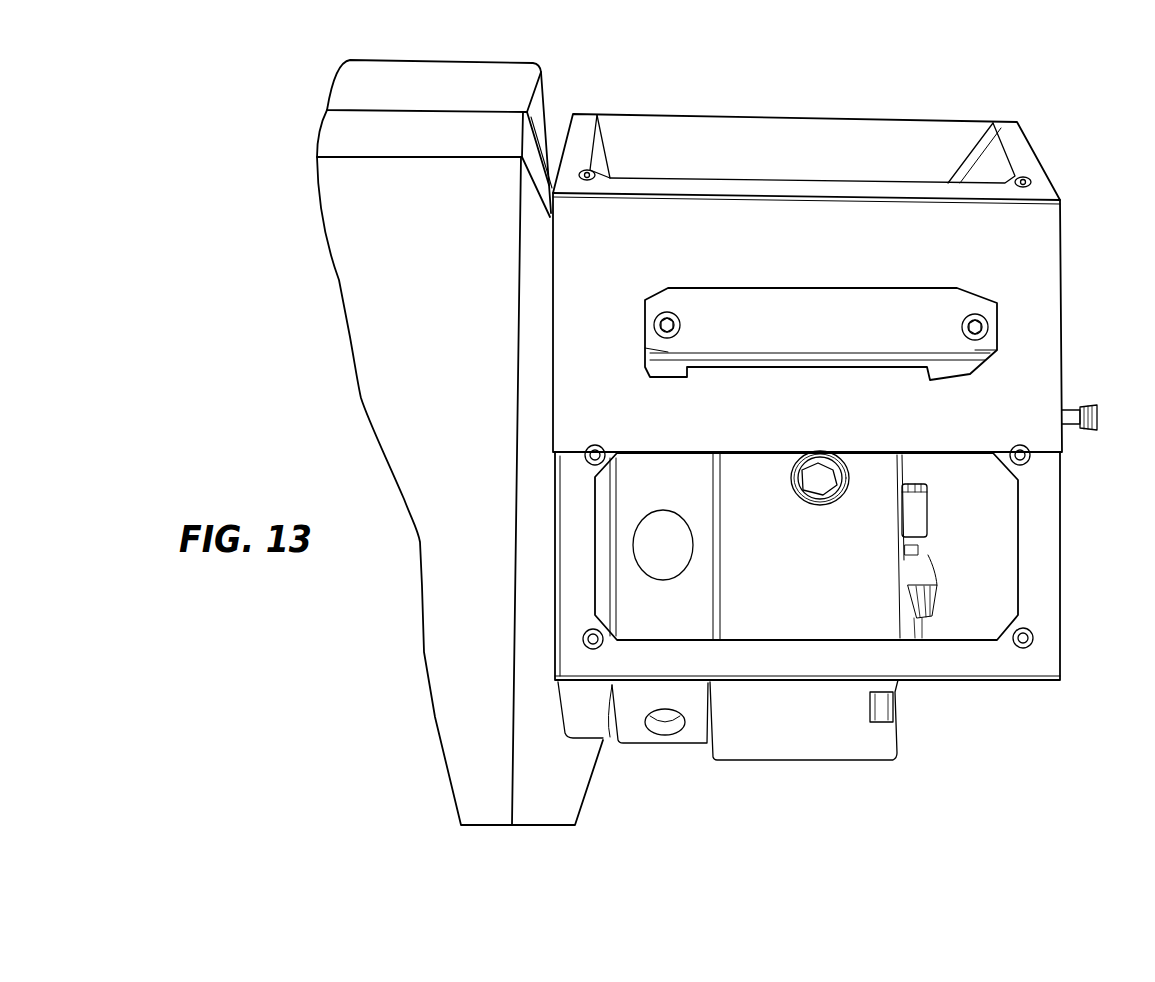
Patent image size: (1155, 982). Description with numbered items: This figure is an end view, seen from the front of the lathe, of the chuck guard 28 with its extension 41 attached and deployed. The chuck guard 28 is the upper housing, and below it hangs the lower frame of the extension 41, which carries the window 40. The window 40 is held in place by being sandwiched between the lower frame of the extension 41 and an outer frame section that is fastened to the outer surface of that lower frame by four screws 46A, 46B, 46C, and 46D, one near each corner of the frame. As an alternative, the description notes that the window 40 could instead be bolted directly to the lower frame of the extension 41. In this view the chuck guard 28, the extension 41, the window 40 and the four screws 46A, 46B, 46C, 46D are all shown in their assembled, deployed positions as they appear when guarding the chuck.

The chuck guard 28 is at (880, 217).
The window 40 is at (763, 613).
The extension 41 is at (950, 682).
The screw 46A is at (585, 638).
The screw 46B is at (592, 458).
The screw 46C is at (1022, 458).
The screw 46D is at (1030, 638).